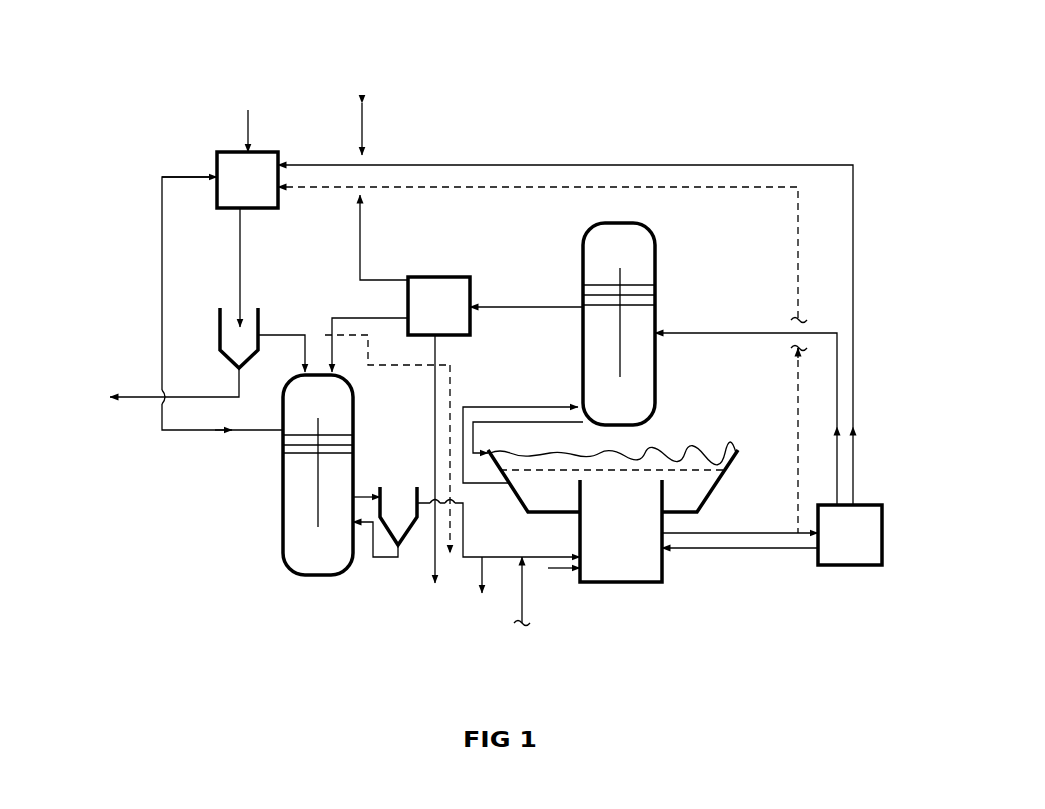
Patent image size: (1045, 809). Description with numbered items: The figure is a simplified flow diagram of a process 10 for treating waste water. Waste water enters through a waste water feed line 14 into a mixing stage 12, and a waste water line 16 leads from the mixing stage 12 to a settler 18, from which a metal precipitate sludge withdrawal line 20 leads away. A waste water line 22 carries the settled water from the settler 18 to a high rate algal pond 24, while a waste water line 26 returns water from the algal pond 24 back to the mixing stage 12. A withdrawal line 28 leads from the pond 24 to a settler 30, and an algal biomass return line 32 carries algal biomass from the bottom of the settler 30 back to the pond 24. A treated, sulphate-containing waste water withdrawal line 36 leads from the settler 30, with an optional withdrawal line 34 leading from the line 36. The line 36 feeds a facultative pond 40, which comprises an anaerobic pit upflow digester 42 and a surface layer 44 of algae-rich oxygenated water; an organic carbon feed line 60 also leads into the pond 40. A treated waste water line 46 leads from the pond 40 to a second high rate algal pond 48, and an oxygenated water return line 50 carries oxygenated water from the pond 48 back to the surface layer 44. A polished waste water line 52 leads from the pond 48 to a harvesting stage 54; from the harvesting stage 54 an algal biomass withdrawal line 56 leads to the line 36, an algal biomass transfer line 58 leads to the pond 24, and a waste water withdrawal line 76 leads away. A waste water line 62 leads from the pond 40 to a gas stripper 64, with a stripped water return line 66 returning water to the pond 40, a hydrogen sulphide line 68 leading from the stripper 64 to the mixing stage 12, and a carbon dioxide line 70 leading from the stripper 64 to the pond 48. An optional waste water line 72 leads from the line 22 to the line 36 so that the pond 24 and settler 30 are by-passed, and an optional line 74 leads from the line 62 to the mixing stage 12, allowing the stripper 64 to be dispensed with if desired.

The process for treating waste water 10 is at (673, 97).
The mixing stage 12 is at (236, 190).
The waste water feed line 14 is at (248, 127).
The waste water line 16 is at (240, 245).
The settler 18 is at (220, 325).
The metal precipitate sludge withdrawal line 20 is at (137, 402).
The waste water line 22 is at (283, 322).
The high rate algal pond 24 is at (301, 559).
The waste water line 26 is at (258, 435).
The withdrawal line 28 is at (358, 493).
The settler 30 is at (417, 496).
The algal biomass return line 32 is at (370, 522).
The withdrawal line 34 is at (480, 573).
The treated waste water withdrawal line 36 is at (497, 560).
The facultative pond 40 is at (712, 440).
The anaerobic pit upflow digester 42 is at (618, 557).
The surface layer of algae-rich oxygenated water 44 is at (662, 467).
The treated waste water line 46 is at (503, 408).
The high rate algal pond 48 is at (604, 409).
The oxygenated water return line 50 is at (493, 427).
The polished waste water line 52 is at (553, 307).
The harvesting stage 54 is at (428, 313).
The algal biomass withdrawal line 56 is at (362, 140).
The algal biomass transfer line 58 is at (367, 318).
The organic carbon feed line 60 is at (548, 578).
The waste water line 62 is at (725, 530).
The gas stripper 64 is at (839, 549).
The stripped water return line 66 is at (725, 548).
The hydrogen sulphide line 68 is at (855, 278).
The carbon dioxide line 70 is at (742, 333).
The optional waste water line 72 is at (423, 363).
The optional line 74 is at (662, 187).
The waste water withdrawal line 76 is at (430, 555).